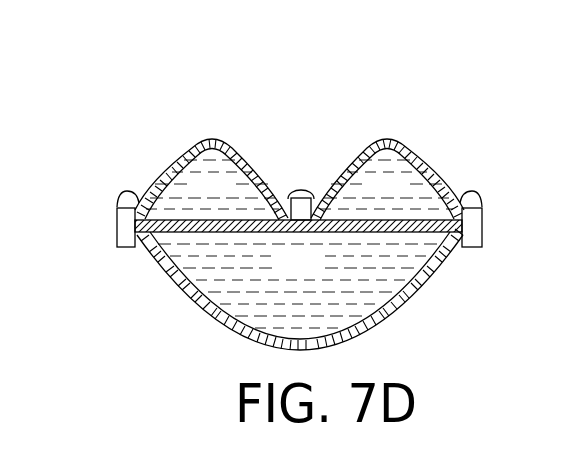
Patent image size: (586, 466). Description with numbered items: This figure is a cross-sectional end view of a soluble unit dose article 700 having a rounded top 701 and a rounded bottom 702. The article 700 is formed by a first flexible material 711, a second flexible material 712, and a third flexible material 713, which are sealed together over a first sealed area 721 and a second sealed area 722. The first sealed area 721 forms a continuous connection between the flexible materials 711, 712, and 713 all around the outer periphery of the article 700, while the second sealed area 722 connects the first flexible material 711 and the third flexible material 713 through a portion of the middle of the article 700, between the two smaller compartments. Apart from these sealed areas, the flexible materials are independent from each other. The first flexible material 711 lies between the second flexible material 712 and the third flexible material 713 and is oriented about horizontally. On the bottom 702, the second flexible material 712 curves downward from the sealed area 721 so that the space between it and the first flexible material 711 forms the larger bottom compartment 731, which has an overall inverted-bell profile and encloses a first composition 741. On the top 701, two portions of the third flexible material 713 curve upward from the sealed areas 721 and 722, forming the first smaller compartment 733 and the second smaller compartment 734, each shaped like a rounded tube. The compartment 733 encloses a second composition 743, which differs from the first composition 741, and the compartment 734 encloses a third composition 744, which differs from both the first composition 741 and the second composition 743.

The soluble unit dose article 700 is at (108, 84).
The rounded top 701 is at (145, 116).
The rounded bottom 702 is at (204, 338).
The first flexible material 711 is at (165, 237).
The second flexible material 712 is at (187, 290).
The third flexible material 713 is at (228, 142).
The first sealed area 721 is at (133, 190).
The second sealed area 722 is at (298, 194).
The larger bottom compartment 731 is at (345, 292).
The first smaller compartment 733 is at (176, 165).
The second smaller compartment 734 is at (422, 183).
The first composition 741 is at (320, 273).
The second composition 743 is at (233, 194).
The third composition 744 is at (406, 194).